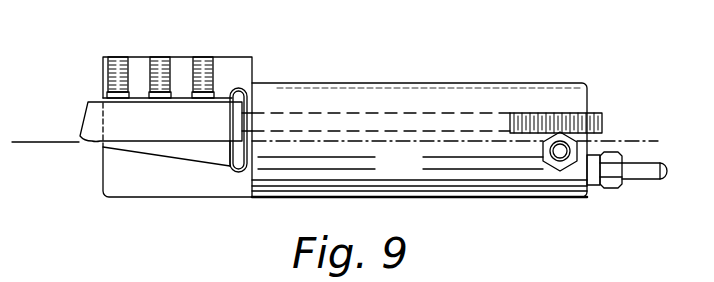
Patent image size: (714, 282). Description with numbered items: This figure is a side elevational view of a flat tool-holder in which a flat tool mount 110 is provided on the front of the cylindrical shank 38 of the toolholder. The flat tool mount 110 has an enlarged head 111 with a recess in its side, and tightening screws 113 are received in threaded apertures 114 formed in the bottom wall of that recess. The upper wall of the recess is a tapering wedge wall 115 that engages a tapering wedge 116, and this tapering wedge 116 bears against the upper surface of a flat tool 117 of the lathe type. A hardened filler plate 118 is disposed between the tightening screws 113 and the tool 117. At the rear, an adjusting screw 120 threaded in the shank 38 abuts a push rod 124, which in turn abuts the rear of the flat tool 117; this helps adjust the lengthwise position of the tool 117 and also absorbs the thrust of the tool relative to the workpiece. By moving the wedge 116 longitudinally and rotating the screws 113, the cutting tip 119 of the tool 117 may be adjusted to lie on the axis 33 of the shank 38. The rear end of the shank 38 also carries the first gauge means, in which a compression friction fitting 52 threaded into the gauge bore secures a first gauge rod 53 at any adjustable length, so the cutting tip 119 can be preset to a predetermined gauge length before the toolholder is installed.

The axis 33 is at (370, 143).
The cylindrical shank 38 is at (327, 192).
The compression friction fitting 52 is at (617, 187).
The first gauge rod 53 is at (662, 178).
The flat tool mount 110 is at (202, 199).
The enlarged head 111 is at (103, 180).
The tightening screws 113 is at (162, 53).
The threaded apertures 114 is at (207, 53).
The tapering wedge wall 115 is at (143, 155).
The tapering wedge 116 is at (198, 153).
The flat tool 117 is at (85, 112).
The hardened filler plate 118 is at (97, 93).
The cutting tip 119 is at (80, 141).
The adjusting screw 120 is at (598, 117).
The push rod 124 is at (433, 113).